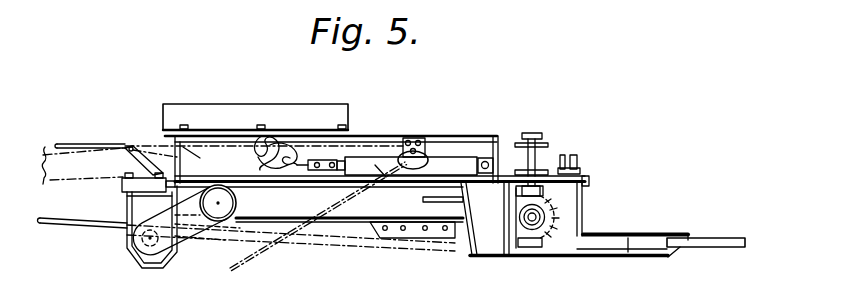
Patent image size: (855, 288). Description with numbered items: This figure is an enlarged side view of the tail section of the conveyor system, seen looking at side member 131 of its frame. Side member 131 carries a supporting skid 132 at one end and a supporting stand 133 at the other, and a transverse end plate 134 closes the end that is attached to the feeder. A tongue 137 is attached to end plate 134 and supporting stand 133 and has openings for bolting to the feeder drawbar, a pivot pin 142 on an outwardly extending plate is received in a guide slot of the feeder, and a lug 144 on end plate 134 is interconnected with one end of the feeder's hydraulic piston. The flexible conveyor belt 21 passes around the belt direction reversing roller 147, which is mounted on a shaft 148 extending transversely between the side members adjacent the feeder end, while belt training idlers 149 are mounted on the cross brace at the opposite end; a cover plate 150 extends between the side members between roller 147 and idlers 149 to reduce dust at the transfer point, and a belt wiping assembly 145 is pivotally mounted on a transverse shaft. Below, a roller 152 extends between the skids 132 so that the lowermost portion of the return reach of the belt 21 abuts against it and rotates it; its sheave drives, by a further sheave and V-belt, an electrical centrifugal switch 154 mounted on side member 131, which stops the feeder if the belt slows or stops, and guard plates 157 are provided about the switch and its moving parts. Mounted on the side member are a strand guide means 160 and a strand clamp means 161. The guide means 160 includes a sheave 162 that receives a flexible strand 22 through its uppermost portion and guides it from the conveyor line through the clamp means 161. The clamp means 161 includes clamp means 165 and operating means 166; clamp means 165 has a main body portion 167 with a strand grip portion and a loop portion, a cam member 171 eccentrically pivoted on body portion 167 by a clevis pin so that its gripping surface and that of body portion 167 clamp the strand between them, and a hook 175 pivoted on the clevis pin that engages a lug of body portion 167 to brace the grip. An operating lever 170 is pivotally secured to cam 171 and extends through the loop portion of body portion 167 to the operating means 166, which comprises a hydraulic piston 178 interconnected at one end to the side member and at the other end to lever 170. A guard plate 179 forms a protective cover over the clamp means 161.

The flexible conveyor belt 21 is at (57, 176).
The flexible strands 22 is at (73, 140).
The side member 131 is at (460, 139).
The supporting skid 132 is at (160, 268).
The supporting stand 133 is at (492, 258).
The transverse end plate 134 is at (590, 178).
The tongue 137 is at (674, 248).
The pivot pin 142 is at (536, 133).
The lug 144 is at (580, 163).
The belt wiping assembly 145 is at (412, 238).
The belt direction reversing roller 147 is at (556, 230).
The shaft 148 is at (536, 238).
The belt training idlers 149 is at (124, 161).
The cover plate 150 is at (178, 104).
The roller 152 is at (122, 244).
The electrical centrifugal switch 154 is at (218, 212).
The guard plates 157 is at (181, 233).
The strand guide means 160 is at (444, 120).
The strand clamp means 161 is at (329, 101).
The sheave 162 is at (429, 154).
The clamp means 165 is at (266, 118).
The operating means 166 is at (368, 157).
The main body portion 167 is at (298, 157).
The operating lever 170 is at (296, 181).
The cam member 171 is at (250, 167).
The hook 175 is at (278, 133).
The hydraulic piston 178 is at (380, 177).
The guard plate 179 is at (172, 146).